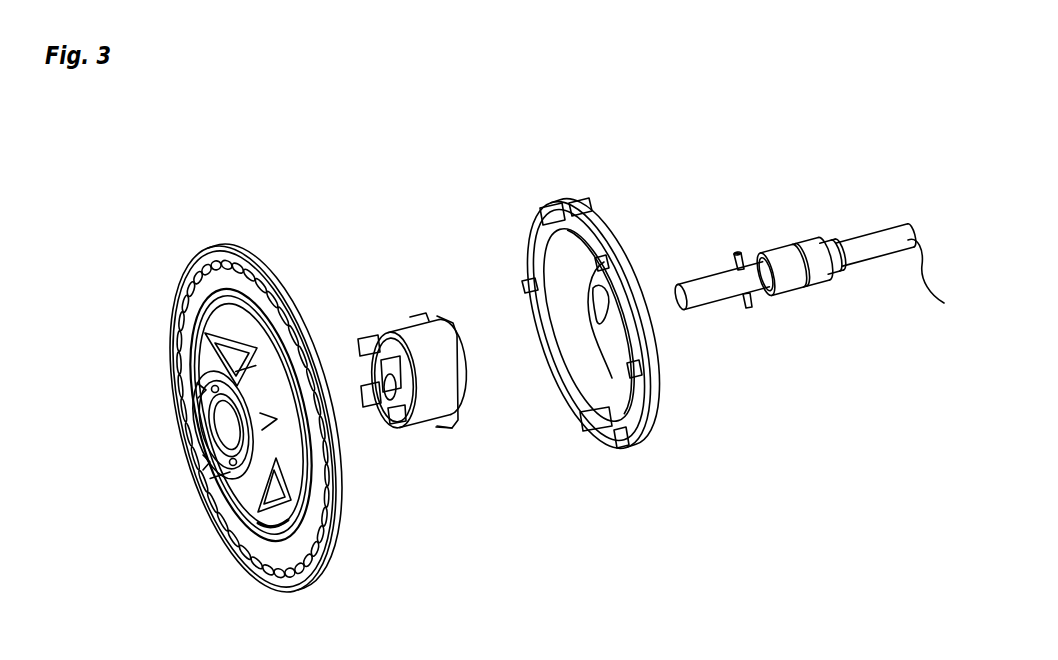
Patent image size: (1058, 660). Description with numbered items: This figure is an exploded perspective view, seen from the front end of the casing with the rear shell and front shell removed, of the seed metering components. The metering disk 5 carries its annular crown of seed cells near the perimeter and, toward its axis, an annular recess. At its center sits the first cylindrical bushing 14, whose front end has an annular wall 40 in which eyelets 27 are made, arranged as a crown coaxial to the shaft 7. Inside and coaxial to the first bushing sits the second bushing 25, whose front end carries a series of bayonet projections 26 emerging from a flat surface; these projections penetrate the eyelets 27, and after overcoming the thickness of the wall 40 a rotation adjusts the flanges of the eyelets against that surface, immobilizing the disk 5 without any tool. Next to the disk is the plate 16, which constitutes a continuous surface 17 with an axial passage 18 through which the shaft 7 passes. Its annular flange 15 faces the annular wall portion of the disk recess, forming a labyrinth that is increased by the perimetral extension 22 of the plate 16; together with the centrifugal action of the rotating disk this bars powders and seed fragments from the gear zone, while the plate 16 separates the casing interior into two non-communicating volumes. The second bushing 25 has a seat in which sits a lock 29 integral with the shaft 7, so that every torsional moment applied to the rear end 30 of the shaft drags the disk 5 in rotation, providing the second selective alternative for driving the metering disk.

The metering disk 5 is at (222, 232).
The first cylindrical bushing 14 is at (268, 452).
The eyelets 27 is at (237, 465).
The annular wall 40 is at (213, 388).
The second bushing 25 is at (409, 347).
The bayonet projections 26 is at (367, 340).
The plate 16 is at (610, 468).
The annular flange 15 is at (562, 388).
The continuous surface 17 is at (563, 280).
The perimetral extension 22 is at (585, 208).
The axial passage 18 is at (606, 319).
The shaft 7 is at (805, 218).
The lock 29 is at (738, 252).
The rear end 30 is at (935, 291).